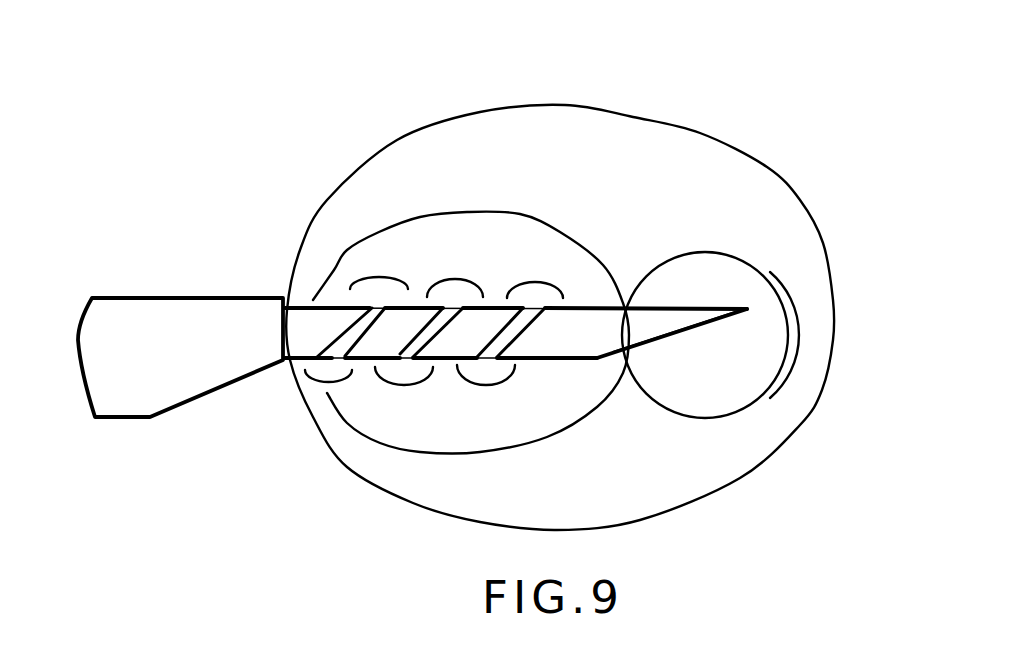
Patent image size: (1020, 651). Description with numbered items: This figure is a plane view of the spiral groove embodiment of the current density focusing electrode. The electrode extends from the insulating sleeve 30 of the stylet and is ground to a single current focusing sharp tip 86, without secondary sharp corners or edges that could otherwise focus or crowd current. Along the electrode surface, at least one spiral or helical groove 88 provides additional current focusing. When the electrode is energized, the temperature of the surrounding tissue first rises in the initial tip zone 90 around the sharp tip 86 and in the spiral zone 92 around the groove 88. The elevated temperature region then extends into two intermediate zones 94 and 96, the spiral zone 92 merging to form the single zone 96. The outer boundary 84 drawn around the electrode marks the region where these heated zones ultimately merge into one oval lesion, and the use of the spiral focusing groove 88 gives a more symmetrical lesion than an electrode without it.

The insulating sleeve 30 is at (172, 300).
The outer tissue region 84 is at (401, 146).
The current focusing sharp tip 86 is at (732, 300).
The spiral groove 88 is at (482, 365).
The initial tip zone 90 is at (758, 292).
The spiral zone 92 is at (363, 282).
The intermediate zone 94 is at (787, 331).
The intermediate zone 96 is at (427, 212).